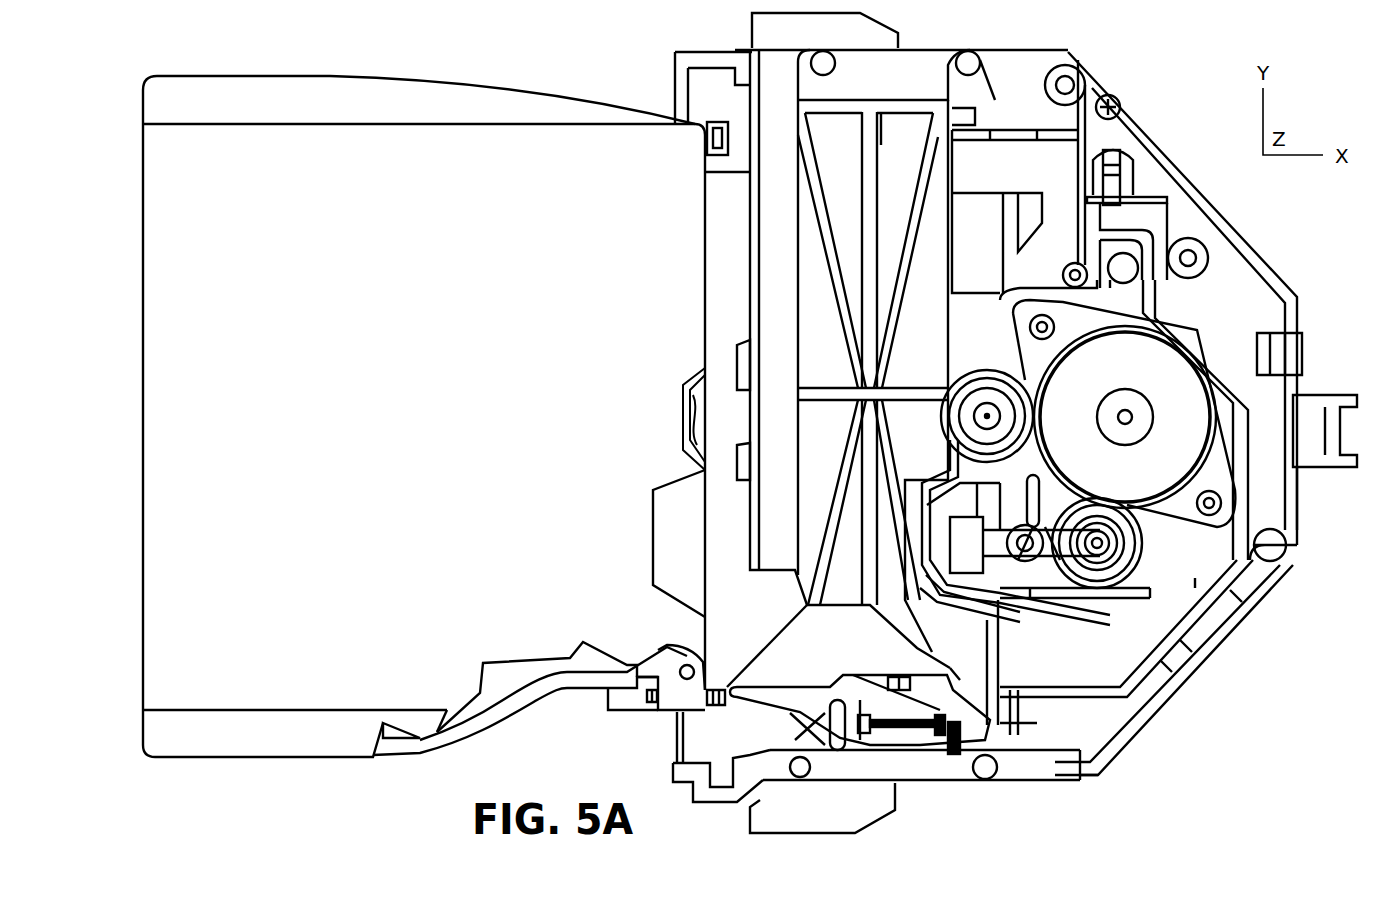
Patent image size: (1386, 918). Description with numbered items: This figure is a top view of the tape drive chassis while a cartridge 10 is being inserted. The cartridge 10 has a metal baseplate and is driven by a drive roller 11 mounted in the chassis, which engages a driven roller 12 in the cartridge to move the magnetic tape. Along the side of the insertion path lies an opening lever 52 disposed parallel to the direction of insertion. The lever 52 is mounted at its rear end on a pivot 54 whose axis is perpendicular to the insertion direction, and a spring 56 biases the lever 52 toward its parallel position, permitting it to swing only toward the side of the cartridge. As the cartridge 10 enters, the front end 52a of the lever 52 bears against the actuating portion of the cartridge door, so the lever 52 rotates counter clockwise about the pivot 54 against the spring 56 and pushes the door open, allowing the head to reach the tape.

The cartridge 10 is at (400, 122).
The drive roller 11 is at (987, 392).
The driven roller 12 is at (707, 398).
The opening lever 52 is at (783, 688).
The front end of lever 52a is at (735, 670).
The pivot 54 is at (943, 745).
The spring 56 is at (950, 760).